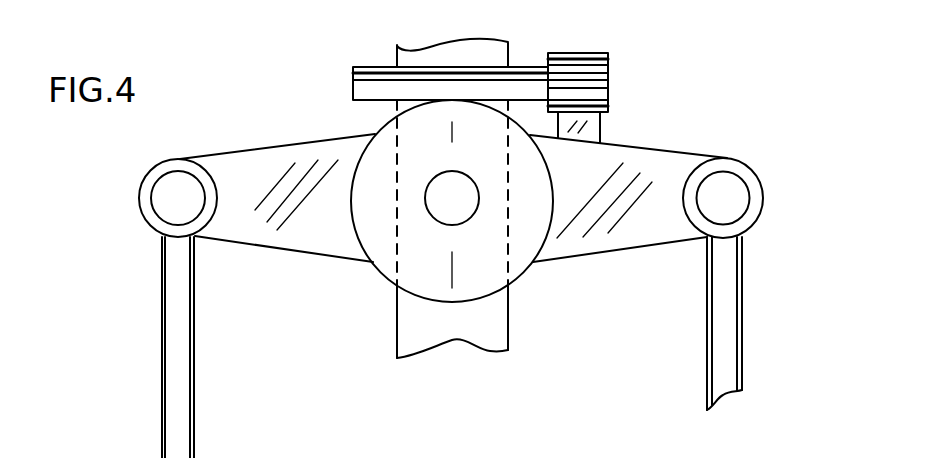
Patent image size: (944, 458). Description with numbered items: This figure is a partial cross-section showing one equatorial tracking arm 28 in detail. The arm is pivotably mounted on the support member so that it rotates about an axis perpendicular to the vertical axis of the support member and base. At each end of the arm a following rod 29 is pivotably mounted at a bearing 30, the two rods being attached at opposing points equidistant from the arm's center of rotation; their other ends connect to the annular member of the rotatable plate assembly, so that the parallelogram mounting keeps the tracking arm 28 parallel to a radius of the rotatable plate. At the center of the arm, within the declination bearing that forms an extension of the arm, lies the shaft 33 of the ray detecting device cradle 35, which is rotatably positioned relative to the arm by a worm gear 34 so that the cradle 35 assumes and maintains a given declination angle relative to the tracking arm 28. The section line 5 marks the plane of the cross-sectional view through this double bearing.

The section line 5-5' 5 is at (450, 43).
The equatorial tracking arm 28 is at (652, 225).
The following rods 29 is at (177, 333).
The bearing 30 is at (172, 200).
The shaft 33 is at (443, 207).
The worm gear 34 is at (425, 157).
The ray detecting device cradle 35 is at (467, 325).